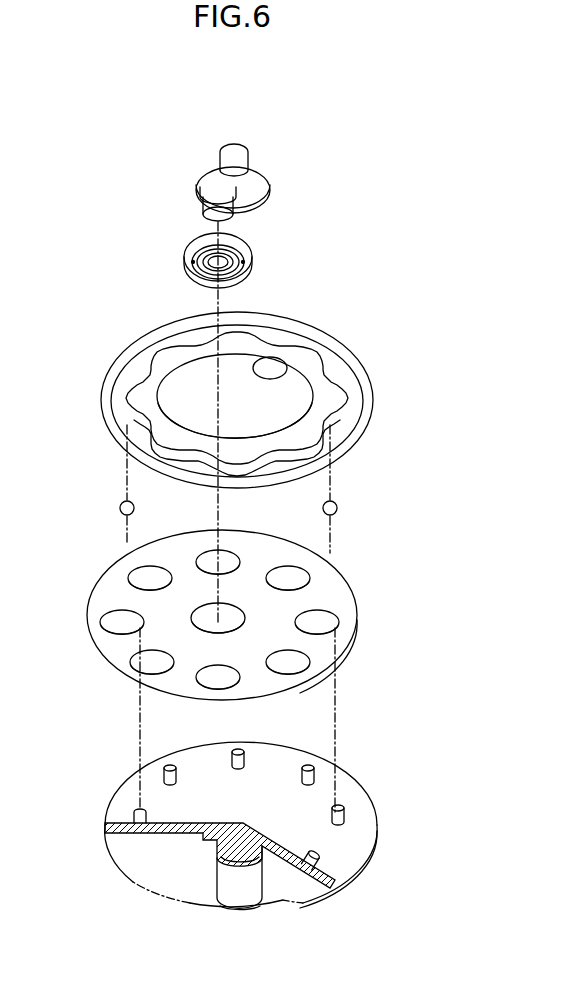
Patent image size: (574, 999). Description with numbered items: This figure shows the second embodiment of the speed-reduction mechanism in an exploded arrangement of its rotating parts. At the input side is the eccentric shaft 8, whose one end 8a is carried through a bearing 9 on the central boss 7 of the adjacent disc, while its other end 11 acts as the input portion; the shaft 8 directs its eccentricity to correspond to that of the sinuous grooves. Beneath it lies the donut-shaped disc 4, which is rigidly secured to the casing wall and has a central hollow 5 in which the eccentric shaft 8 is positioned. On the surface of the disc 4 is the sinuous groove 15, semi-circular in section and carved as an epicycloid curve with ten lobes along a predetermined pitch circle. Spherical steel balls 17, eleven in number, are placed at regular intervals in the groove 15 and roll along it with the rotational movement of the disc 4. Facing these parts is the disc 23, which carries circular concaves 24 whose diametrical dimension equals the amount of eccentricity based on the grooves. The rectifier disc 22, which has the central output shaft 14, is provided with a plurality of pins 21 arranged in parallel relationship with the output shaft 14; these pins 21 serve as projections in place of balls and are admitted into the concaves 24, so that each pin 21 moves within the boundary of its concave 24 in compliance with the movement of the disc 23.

The donut-shaped disc 4 is at (216, 384).
The central hollow 5 is at (276, 357).
The central boss 7 is at (205, 608).
The eccentric shaft 8 is at (239, 173).
The one end of the eccentric shaft 8a is at (203, 204).
The bearing 9 is at (184, 260).
The other end of the eccentric shaft 11 is at (226, 151).
The central output shaft 14 is at (252, 888).
The sinuous groove 15 is at (170, 348).
The spherical balls 17 is at (120, 506).
The pins 21 is at (169, 768).
The rectifier disc 22 is at (206, 832).
The disc 23 is at (196, 613).
The circular concaves 24 is at (154, 568).